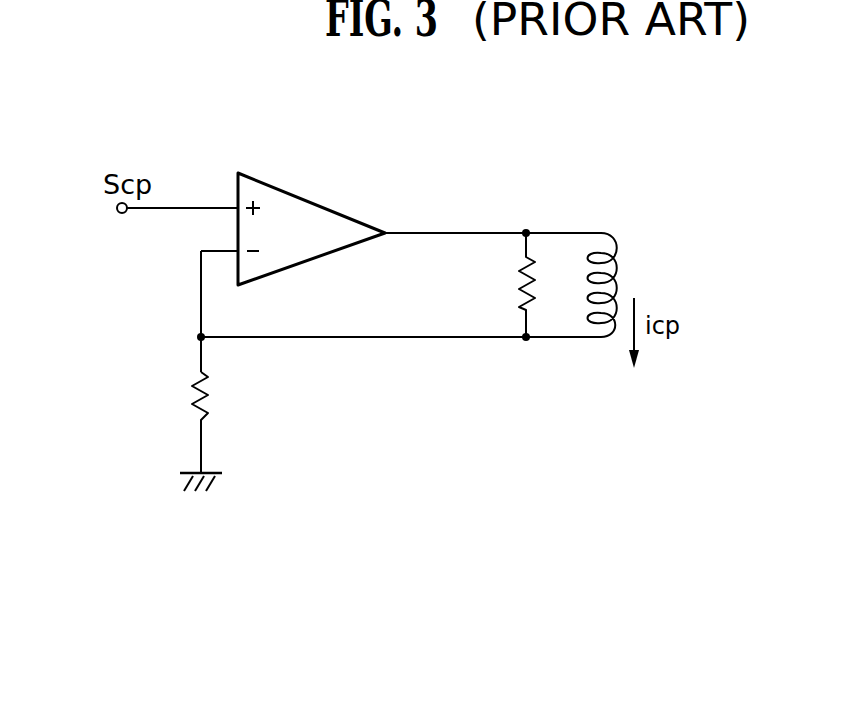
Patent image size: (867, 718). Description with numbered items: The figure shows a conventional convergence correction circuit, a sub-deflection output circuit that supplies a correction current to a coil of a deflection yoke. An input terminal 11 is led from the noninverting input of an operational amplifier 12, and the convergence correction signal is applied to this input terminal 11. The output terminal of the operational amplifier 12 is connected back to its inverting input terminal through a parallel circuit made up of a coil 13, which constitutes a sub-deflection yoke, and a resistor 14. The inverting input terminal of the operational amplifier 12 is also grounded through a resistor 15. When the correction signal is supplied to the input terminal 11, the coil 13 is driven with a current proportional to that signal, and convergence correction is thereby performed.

The input terminal 11 is at (123, 214).
The operational amplifier 12 is at (314, 203).
The coil 13 is at (613, 266).
The resistor 14 is at (522, 286).
The resistor 15 is at (197, 408).